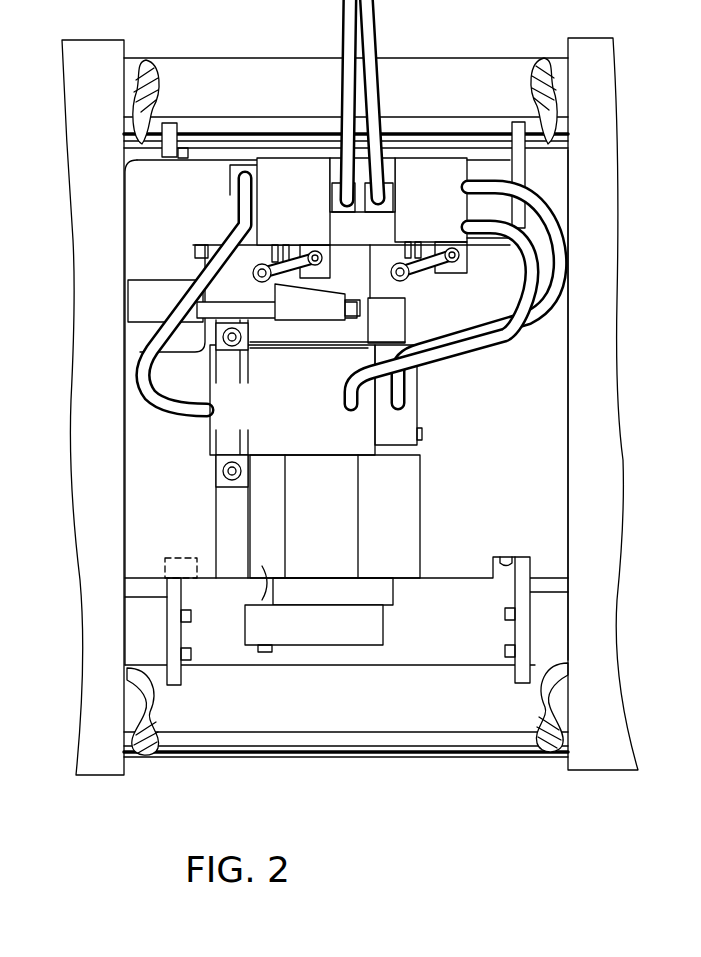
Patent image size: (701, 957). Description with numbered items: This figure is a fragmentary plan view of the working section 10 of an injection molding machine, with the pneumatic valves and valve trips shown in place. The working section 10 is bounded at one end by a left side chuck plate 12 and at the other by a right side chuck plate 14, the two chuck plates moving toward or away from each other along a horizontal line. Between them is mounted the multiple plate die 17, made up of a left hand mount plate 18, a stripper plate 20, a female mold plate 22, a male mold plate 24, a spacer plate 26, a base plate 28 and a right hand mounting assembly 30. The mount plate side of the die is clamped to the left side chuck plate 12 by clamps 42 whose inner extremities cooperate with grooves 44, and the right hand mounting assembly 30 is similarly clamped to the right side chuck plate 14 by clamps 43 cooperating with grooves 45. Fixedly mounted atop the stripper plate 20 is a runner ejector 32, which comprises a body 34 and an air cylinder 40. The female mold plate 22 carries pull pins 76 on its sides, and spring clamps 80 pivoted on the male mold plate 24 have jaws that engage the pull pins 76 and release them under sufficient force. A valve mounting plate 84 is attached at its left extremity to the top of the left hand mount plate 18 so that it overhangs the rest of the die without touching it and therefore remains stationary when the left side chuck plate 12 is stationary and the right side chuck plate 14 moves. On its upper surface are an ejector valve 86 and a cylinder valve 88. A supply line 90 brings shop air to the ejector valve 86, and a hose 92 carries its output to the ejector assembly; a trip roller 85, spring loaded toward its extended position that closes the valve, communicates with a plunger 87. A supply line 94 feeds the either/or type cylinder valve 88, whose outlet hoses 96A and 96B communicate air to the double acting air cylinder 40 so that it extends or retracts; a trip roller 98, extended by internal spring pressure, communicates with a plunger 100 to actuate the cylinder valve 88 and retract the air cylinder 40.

The working section 10 is at (218, 25).
The left side chuck plate 12 is at (100, 650).
The right side chuck plate 14 is at (580, 472).
The multiple plate die 17 is at (578, 355).
The left hand mount plate 18 is at (143, 520).
The stripper plate 20 is at (230, 512).
The female mold plate 22 is at (258, 590).
The male mold plate 24 is at (330, 476).
The spacer plate 26 is at (340, 557).
The base plate 28 is at (400, 517).
The right hand mounting assembly 30 is at (517, 462).
The runner ejector 32 is at (152, 427).
The body 34 is at (286, 427).
The air cylinder 40 is at (405, 425).
The clamps 42 is at (170, 126).
The clamps 43 is at (520, 640).
The grooves 44 is at (185, 558).
The grooves 45 is at (505, 557).
The pull pins 76 is at (266, 652).
The spring clamps 80 is at (394, 641).
The valve mounting plate 84 is at (130, 222).
The trip roller 85 is at (233, 262).
The ejector valve 86 is at (290, 175).
The plunger 87 is at (268, 255).
The cylinder valve 88 is at (420, 168).
The supply line 90 is at (345, 26).
The hose 92 is at (238, 220).
The supply line 94 is at (372, 30).
The outlet hose 96A is at (528, 247).
The outlet hose 96B is at (550, 282).
The trip roller 98 is at (405, 278).
The plunger 100 is at (412, 247).